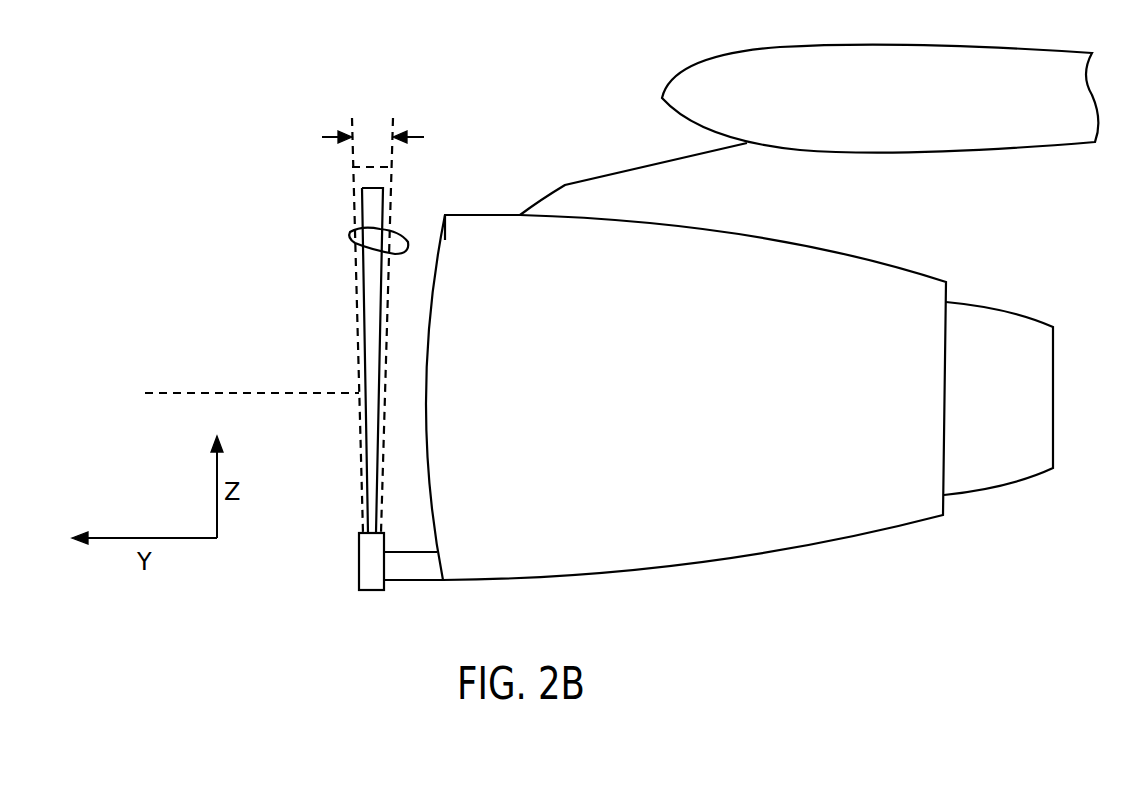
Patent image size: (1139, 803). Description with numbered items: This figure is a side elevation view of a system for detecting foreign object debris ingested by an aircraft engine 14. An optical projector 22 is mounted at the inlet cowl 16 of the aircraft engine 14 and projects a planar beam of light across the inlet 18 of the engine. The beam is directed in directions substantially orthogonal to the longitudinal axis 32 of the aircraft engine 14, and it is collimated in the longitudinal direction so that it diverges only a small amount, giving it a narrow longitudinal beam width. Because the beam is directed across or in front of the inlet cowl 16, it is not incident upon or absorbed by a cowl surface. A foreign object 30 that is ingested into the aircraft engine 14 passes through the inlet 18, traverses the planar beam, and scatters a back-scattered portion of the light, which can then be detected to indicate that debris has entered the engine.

The aircraft engine 14 is at (646, 393).
The inlet cowl 16 is at (434, 229).
The inlet 18 is at (418, 461).
The optical projector 22 is at (373, 578).
The foreign object 30 is at (350, 232).
The longitudinal axis 32 is at (227, 390).